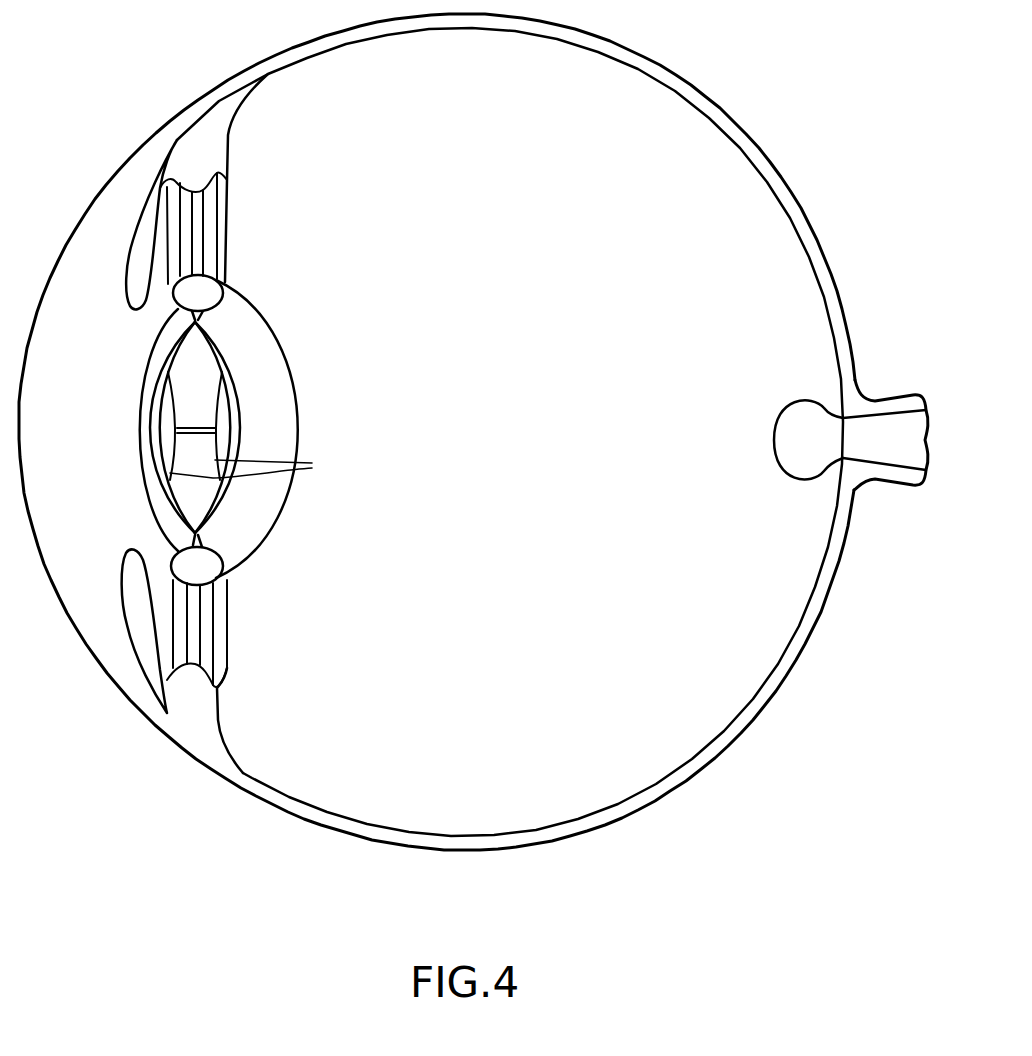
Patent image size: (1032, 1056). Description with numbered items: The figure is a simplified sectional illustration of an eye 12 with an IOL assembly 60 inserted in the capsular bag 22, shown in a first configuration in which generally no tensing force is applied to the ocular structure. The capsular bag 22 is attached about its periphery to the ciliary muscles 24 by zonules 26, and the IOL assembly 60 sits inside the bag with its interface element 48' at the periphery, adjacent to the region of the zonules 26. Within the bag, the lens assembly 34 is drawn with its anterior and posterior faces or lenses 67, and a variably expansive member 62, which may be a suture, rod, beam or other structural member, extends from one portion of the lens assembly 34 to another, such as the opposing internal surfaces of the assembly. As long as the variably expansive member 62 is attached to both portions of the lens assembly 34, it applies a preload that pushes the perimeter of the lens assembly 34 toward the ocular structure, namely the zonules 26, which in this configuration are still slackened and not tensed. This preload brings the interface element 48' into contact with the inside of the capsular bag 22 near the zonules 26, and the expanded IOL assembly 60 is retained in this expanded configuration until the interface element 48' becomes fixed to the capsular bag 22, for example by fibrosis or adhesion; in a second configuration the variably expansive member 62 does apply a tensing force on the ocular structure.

The eye 12 is at (770, 136).
The ciliary muscles 24 is at (210, 160).
The zonules 26 is at (222, 194).
The interface element 48' is at (258, 449).
The capsular bag 22 is at (257, 303).
The lens assembly 34 is at (225, 400).
The IOL assembly 60 is at (243, 537).
The variably expansive member 62 is at (195, 428).
The lenses 67 is at (263, 470).